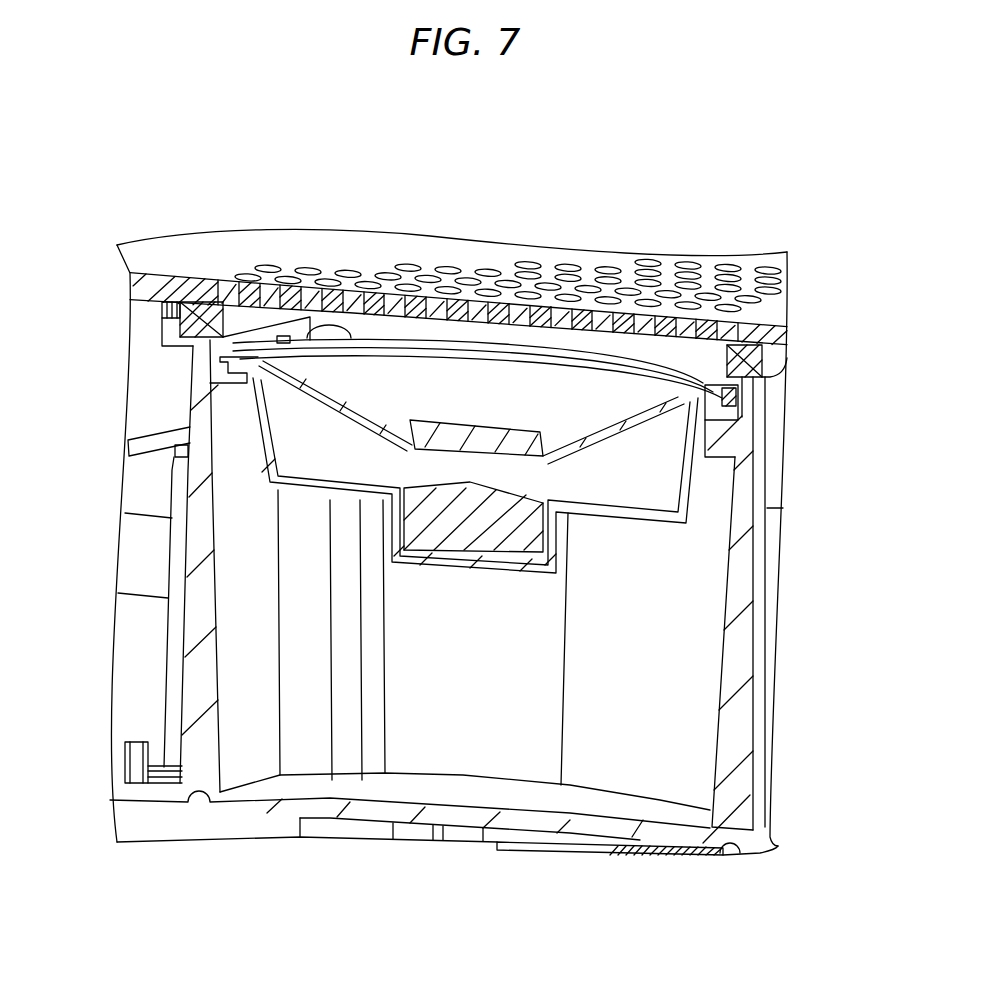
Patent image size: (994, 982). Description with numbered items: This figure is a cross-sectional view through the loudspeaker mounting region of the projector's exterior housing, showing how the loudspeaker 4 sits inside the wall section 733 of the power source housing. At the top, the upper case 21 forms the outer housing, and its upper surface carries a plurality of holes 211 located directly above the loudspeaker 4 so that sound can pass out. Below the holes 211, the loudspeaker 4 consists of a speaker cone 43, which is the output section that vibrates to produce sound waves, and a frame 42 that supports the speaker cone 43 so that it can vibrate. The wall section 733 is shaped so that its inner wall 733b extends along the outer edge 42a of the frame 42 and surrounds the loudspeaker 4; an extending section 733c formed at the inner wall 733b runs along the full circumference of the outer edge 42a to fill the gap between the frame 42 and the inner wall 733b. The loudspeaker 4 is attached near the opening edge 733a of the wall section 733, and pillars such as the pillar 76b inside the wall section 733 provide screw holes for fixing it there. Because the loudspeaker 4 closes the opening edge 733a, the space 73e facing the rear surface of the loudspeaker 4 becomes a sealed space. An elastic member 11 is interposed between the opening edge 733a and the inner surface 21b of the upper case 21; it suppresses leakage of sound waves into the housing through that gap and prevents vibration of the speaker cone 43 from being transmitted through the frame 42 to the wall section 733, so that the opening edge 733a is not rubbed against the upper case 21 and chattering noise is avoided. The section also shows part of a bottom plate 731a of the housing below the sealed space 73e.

The loudspeaker 4 is at (497, 420).
The elastic member 11 is at (752, 363).
The upper case 21 is at (196, 250).
The holes 211 is at (410, 270).
The inner surface 21b is at (166, 322).
The frame 42 is at (272, 473).
The outer edge 42a is at (212, 374).
The speaker cone 43 is at (305, 408).
The pillar 76b is at (297, 677).
The wall section 733 is at (740, 672).
The opening edge 733a is at (760, 384).
The inner wall 733b is at (737, 413).
The extending section 733c is at (720, 440).
The bottom plate 731a is at (388, 790).
The space 73e is at (463, 741).